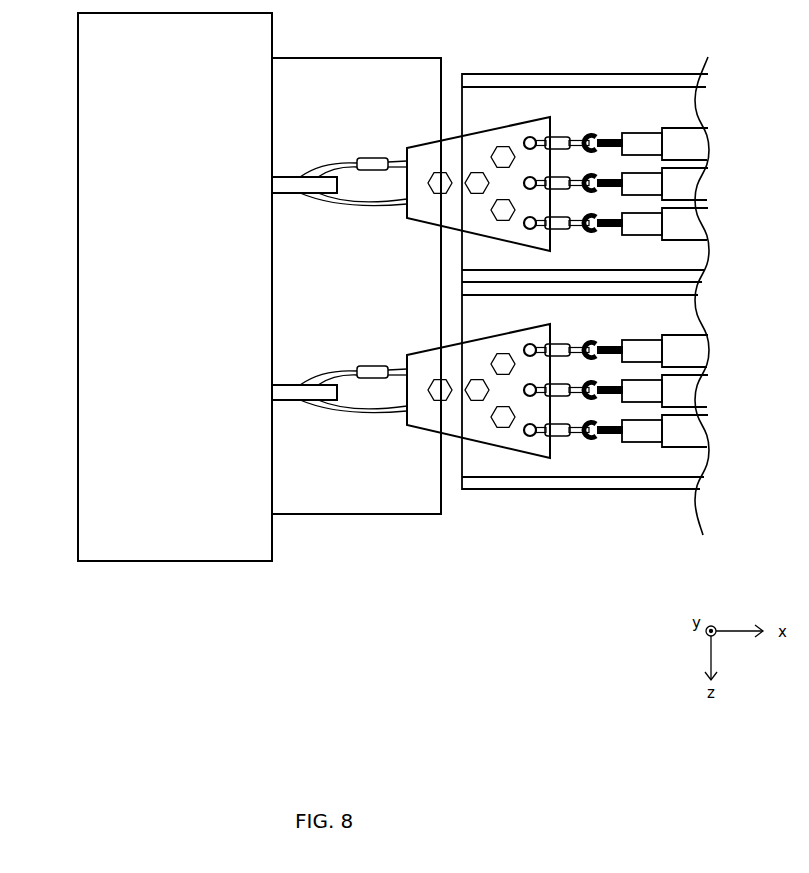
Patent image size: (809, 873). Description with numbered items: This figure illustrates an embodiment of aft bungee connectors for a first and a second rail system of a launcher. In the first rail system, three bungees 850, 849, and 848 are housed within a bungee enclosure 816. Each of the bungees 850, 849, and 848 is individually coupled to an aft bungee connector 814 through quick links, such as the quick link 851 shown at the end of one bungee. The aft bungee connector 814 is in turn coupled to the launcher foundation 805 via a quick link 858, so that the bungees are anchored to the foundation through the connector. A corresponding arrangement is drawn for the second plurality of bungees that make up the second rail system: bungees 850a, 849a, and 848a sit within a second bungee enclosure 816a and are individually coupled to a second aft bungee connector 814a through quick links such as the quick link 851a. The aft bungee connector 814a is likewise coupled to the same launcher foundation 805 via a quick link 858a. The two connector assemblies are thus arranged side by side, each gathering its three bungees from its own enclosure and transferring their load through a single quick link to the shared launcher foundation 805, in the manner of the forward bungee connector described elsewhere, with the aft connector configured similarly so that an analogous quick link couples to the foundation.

The launcher foundation 805 is at (190, 290).
The quick link 858a is at (373, 163).
The quick link 858 is at (373, 371).
The aft bungee connector 814a is at (484, 168).
The aft bungee connector 814 is at (474, 375).
The quick link 851a is at (557, 142).
The quick link 851 is at (557, 438).
The bungee 850a is at (690, 142).
The bungee 849a is at (693, 178).
The bungee 848a is at (693, 223).
The bungee 850 is at (690, 352).
The bungee 849 is at (690, 390).
The bungee 848 is at (690, 432).
The bungee enclosure 816a is at (678, 84).
The bungee enclosure 816 is at (657, 482).